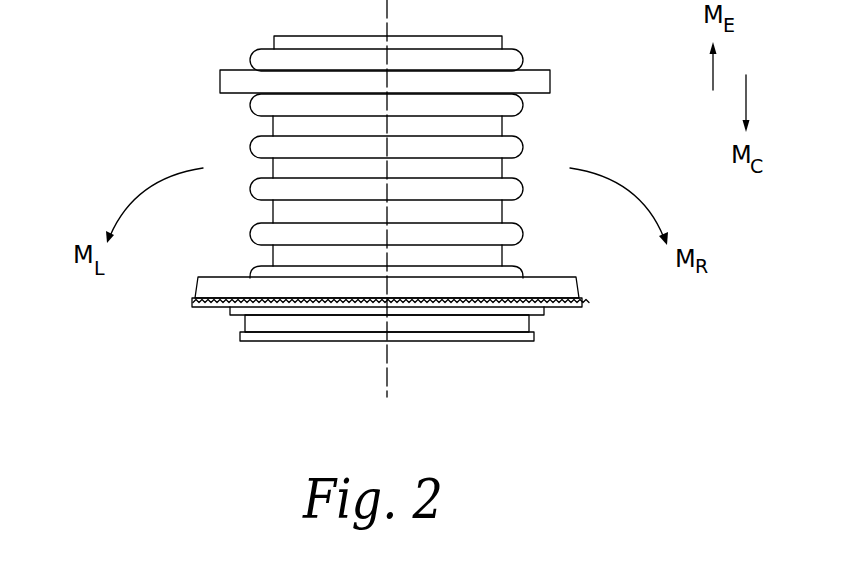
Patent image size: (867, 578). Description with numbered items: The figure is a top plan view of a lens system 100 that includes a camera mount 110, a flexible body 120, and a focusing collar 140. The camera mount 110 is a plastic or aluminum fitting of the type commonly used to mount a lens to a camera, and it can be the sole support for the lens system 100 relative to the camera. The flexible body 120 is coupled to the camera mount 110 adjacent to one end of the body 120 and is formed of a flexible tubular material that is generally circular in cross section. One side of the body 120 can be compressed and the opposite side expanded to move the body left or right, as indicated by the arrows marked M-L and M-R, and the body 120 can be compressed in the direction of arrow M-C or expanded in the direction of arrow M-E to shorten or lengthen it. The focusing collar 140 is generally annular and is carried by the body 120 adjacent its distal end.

The lens system 100 is at (367, 198).
The camera mount 110 is at (553, 287).
The flexible body 120 is at (487, 168).
The focusing collar 140 is at (551, 81).